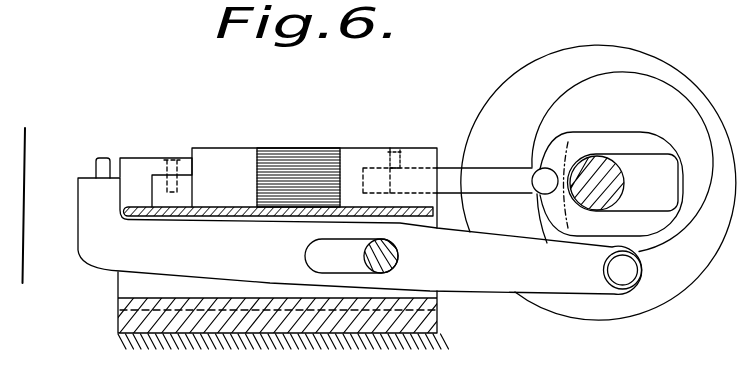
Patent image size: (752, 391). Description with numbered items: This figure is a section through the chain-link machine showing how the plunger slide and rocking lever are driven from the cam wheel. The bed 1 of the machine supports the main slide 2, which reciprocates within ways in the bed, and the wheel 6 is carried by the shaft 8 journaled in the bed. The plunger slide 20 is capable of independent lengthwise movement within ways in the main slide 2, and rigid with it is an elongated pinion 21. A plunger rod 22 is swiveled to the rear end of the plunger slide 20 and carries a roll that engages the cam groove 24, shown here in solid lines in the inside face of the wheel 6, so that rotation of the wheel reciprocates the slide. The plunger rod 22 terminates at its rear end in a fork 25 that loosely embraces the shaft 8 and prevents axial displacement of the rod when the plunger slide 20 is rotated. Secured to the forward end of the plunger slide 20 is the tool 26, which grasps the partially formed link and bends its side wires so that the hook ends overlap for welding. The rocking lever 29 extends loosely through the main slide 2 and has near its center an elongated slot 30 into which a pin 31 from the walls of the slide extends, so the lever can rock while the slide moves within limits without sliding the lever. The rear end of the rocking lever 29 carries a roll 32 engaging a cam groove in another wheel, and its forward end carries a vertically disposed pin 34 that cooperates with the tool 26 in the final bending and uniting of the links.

The bed 1 is at (345, 336).
The main slide 2 is at (440, 309).
The wheel 6 is at (599, 46).
The shaft 8 is at (624, 191).
The plunger slide 20 is at (372, 139).
The elongated pinion 21 is at (298, 148).
The plunger rod 22 is at (497, 205).
The cam groove 24 is at (611, 156).
The fork 25 is at (665, 145).
The tool 26 is at (149, 158).
The rocking lever 29 is at (360, 236).
The elongated slot 30 is at (307, 254).
The pin 31 is at (399, 255).
The roll 32 is at (623, 270).
The pin 34 is at (101, 158).